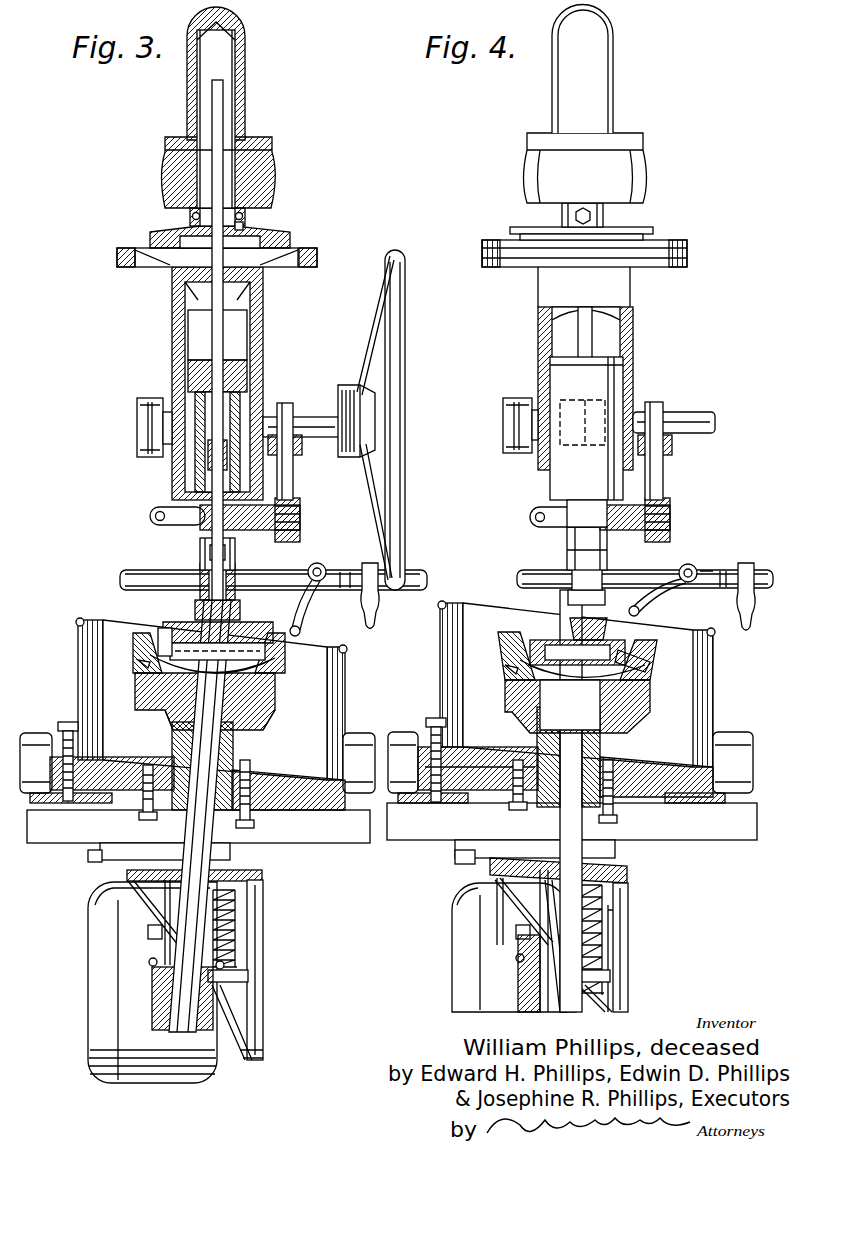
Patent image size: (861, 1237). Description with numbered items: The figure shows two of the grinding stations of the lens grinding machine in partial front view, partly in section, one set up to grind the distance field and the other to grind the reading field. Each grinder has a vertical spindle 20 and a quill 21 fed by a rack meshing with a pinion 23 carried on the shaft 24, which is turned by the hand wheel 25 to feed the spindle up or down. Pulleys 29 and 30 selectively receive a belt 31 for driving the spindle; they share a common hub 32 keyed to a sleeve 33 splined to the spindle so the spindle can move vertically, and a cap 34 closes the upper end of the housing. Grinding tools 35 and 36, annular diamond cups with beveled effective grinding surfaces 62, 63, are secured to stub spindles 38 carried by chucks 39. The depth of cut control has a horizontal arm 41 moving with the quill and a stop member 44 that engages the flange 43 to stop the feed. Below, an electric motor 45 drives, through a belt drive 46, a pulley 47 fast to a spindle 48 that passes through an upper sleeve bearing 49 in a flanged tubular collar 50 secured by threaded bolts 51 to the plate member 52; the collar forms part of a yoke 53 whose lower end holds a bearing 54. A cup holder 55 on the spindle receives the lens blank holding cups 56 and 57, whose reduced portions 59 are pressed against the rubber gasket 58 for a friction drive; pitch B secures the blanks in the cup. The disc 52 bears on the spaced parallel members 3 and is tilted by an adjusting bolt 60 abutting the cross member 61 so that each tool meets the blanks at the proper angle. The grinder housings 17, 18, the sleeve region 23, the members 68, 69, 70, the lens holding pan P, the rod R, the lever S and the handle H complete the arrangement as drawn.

In FIG. 3, the spaced parallel members 3 is at (40, 843).
In FIG. 4, the spaced parallel members 3 is at (425, 843).
In FIG. 3, the housing 17 is at (172, 361).
In FIG. 4, the housing 18 is at (538, 361).
In FIG. 3, the vertical spindle 20 is at (250, 347).
In FIG. 4, the vertical spindle 20 is at (592, 330).
In FIG. 3, the quill 21 is at (180, 508).
In FIG. 4, the quill 21 is at (560, 507).
In FIG. 4, the pinion 23 is at (586, 442).
In FIG. 3, the shaft 24 is at (320, 420).
In FIG. 4, the shaft 24 is at (715, 420).
In FIG. 3, the hand wheel 25 is at (400, 252).
In FIG. 3, the pulley 29 is at (283, 232).
In FIG. 4, the pulley 29 is at (652, 232).
In FIG. 3, the pulley 30 is at (293, 247).
In FIG. 4, the pulley 30 is at (688, 247).
In FIG. 3, the belt 31 is at (317, 258).
In FIG. 4, the belt 31 is at (688, 258).
In FIG. 3, the common hub 32 is at (190, 217).
In FIG. 4, the common hub 32 is at (562, 217).
In FIG. 3, the sleeve 33 is at (243, 224).
In FIG. 3, the cap 34 is at (245, 118).
In FIG. 4, the cap 34 is at (608, 125).
In FIG. 3, the grinding tool 35 is at (262, 623).
In FIG. 4, the grinding tool 36 is at (613, 638).
In FIG. 3, the stub spindle 38 is at (200, 606).
In FIG. 4, the stub spindle 38 is at (568, 604).
In FIG. 3, the chuck 39 is at (236, 562).
In FIG. 4, the chuck 39 is at (597, 568).
In FIG. 3, the horizontal arm 41 is at (185, 528).
In FIG. 4, the horizontal arm 41 is at (640, 532).
In FIG. 3, the flange 43 is at (294, 470).
In FIG. 4, the flange 43 is at (664, 470).
In FIG. 3, the stop member 44 is at (300, 450).
In FIG. 4, the stop member 44 is at (668, 450).
In FIG. 3, the electric motor 45 is at (118, 1085).
In FIG. 4, the electric motor 45 is at (465, 1012).
In FIG. 3, the belt drive 46 is at (264, 900).
In FIG. 4, the belt drive 46 is at (630, 897).
In FIG. 3, the pulley 47 is at (262, 876).
In FIG. 4, the pulley 47 is at (630, 870).
In FIG. 3, the spindle 48 is at (190, 832).
In FIG. 4, the spindle 48 is at (556, 832).
In FIG. 3, the upper sleeve bearing 49 is at (172, 750).
In FIG. 4, the upper sleeve bearing 49 is at (537, 742).
In FIG. 3, the flanged tubular collar 50 is at (240, 770).
In FIG. 4, the flanged tubular collar 50 is at (497, 795).
In FIG. 3, the threaded bolt 51 is at (252, 820).
In FIG. 4, the threaded bolt 51 is at (510, 800).
In FIG. 3, the plate member 52 is at (342, 805).
In FIG. 4, the plate member 52 is at (720, 755).
In FIG. 3, the yoke 53 is at (168, 910).
In FIG. 4, the yoke 53 is at (532, 900).
In FIG. 3, the bearing 54 is at (152, 1030).
In FIG. 4, the bearing 54 is at (530, 1012).
In FIG. 3, the cup holder 55 is at (260, 722).
In FIG. 3, the lens blank holding cup 56 is at (283, 660).
In FIG. 4, the lens blank holding cup 57 is at (650, 672).
In FIG. 3, the rubber gasket 58 is at (145, 690).
In FIG. 4, the rubber gasket 58 is at (505, 703).
In FIG. 3, the reduced portion 59 is at (140, 664).
In FIG. 4, the reduced portion 59 is at (506, 678).
In FIG. 3, the adjusting bolt 60 is at (66, 728).
In FIG. 4, the adjusting bolt 60 is at (434, 720).
In FIG. 3, the cross member 61 is at (72, 805).
In FIG. 4, the cross member 61 is at (420, 805).
In FIG. 3, the effective grinding surface 62 is at (166, 626).
In FIG. 4, the effective grinding surface 63 is at (560, 648).
In FIG. 3, the bearing 68 is at (246, 968).
In FIG. 4, the bearing 68 is at (600, 960).
In FIG. 3, the bearing plate 69 is at (250, 985).
In FIG. 4, the bearing plate 69 is at (606, 980).
In FIG. 3, the bracket 70 is at (232, 852).
In FIG. 4, the bracket 70 is at (598, 852).
In FIG. 4, the pitch B is at (510, 642).
In FIG. 3, the handle H is at (375, 626).
In FIG. 4, the handle H is at (746, 630).
In FIG. 3, the pan P is at (338, 700).
In FIG. 4, the pan P is at (703, 700).
In FIG. 3, the rod R is at (265, 568).
In FIG. 4, the rod R is at (517, 570).
In FIG. 3, the lever S is at (308, 599).
In FIG. 4, the lever S is at (663, 591).